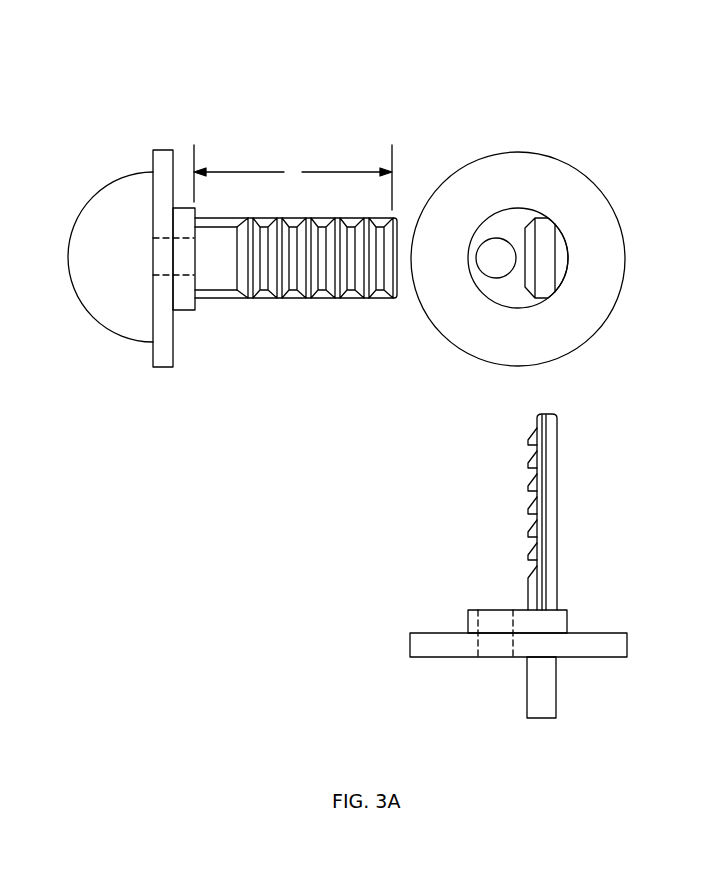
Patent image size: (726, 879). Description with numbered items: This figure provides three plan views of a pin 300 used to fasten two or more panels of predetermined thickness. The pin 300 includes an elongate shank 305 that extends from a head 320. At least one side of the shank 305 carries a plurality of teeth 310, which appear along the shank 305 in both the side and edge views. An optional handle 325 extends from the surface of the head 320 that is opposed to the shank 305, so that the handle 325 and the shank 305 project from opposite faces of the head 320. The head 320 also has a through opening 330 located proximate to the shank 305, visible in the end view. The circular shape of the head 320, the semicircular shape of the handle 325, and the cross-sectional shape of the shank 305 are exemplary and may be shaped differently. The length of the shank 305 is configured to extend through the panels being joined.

The pin 300 is at (168, 93).
The elongate shank 305 is at (225, 298).
The teeth 310 is at (302, 263).
The head 320 is at (582, 343).
The handle 325 is at (108, 330).
The through opening 330 is at (497, 238).